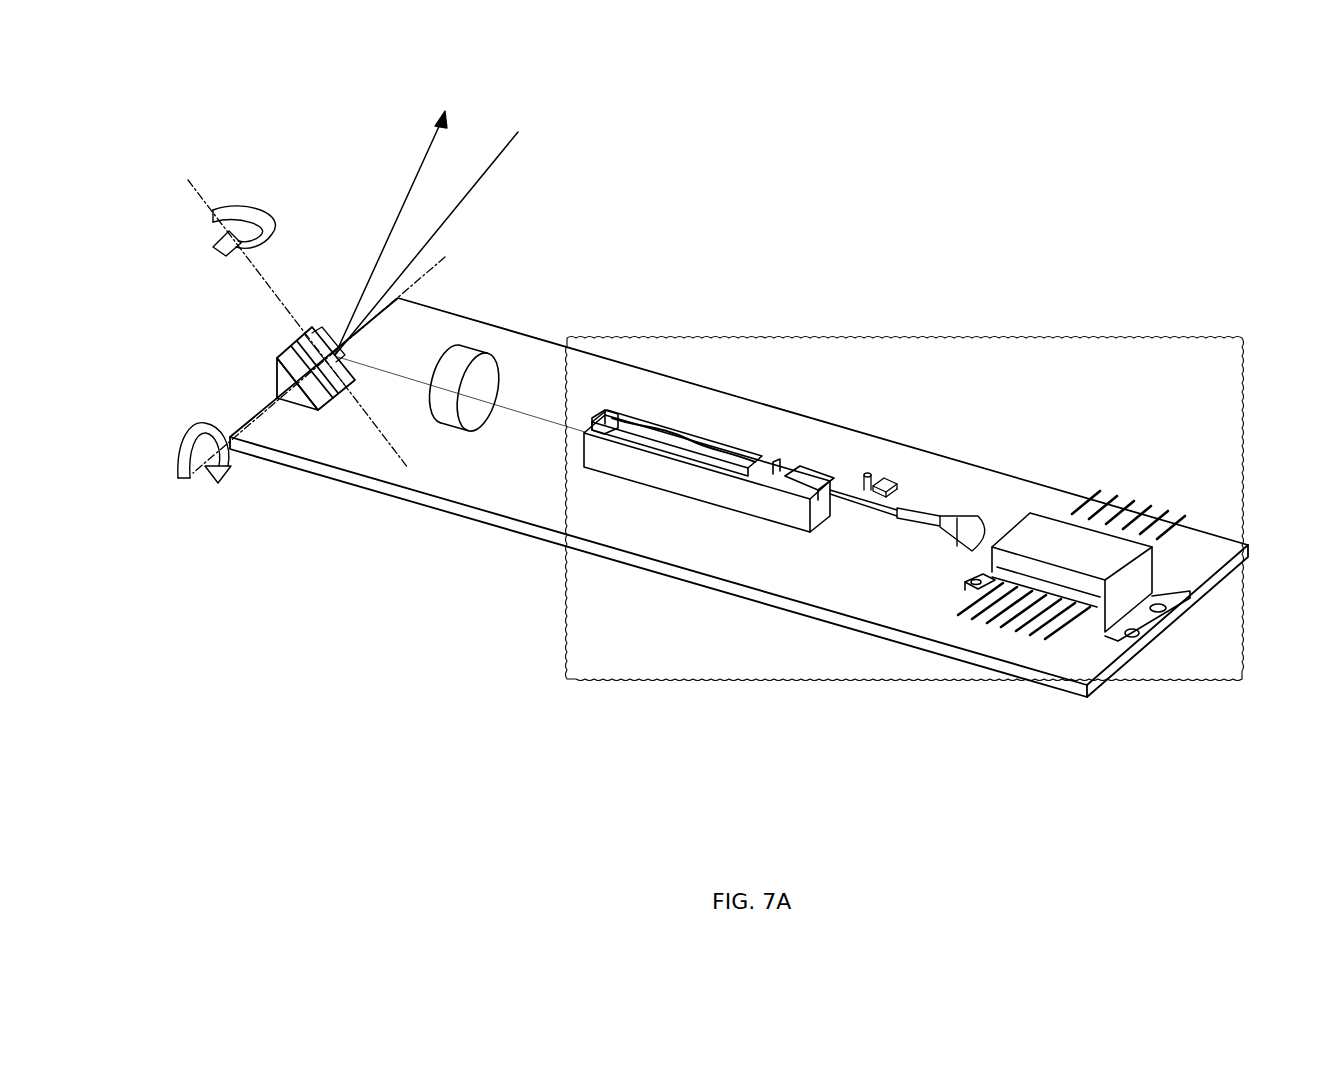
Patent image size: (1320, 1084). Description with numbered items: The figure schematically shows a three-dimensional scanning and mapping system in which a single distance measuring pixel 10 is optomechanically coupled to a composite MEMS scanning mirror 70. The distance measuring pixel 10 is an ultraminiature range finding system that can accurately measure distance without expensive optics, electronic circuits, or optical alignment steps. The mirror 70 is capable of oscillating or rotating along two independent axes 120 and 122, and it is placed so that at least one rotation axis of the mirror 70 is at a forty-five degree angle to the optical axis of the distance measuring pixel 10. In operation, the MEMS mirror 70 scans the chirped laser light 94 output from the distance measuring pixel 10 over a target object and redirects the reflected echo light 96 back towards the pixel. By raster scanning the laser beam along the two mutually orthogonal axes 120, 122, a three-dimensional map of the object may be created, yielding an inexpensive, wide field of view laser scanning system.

The distance measuring pixel 10 is at (838, 359).
The composite MEMS scanning mirror 70 is at (288, 338).
The chirped laser light 94 is at (441, 128).
The reflected echo light 96 is at (435, 241).
The rotation axis 120 is at (207, 197).
The rotation axis 122 is at (231, 448).